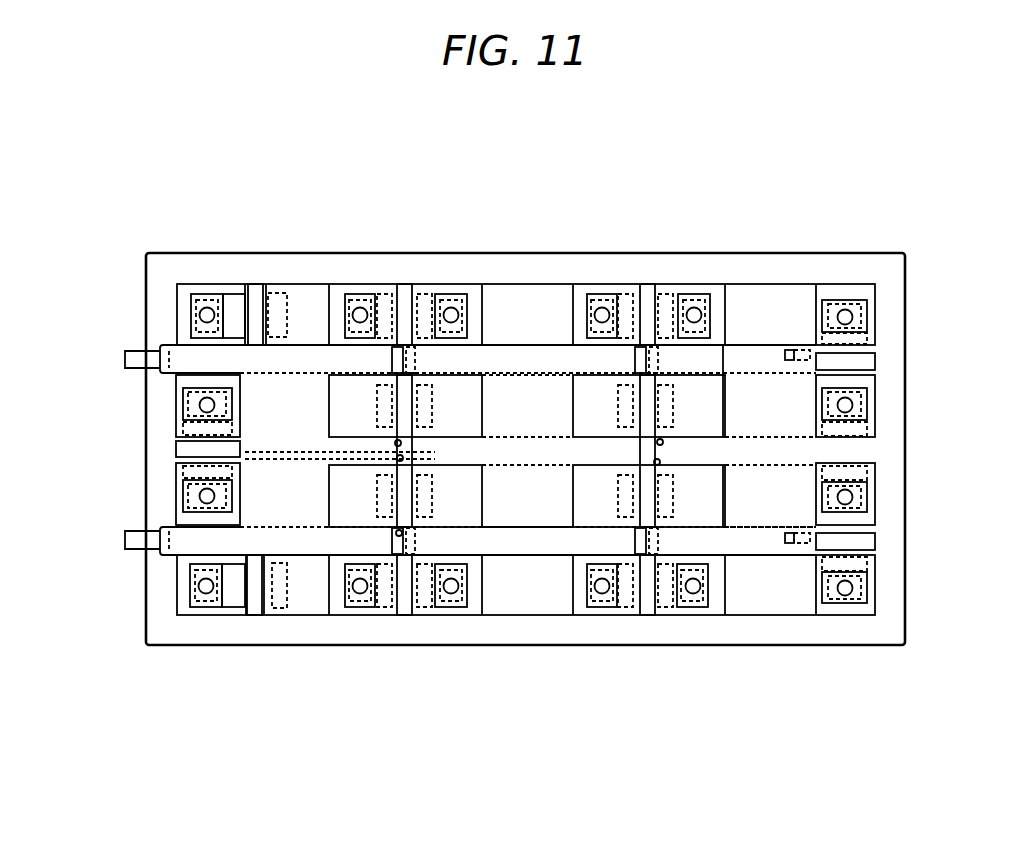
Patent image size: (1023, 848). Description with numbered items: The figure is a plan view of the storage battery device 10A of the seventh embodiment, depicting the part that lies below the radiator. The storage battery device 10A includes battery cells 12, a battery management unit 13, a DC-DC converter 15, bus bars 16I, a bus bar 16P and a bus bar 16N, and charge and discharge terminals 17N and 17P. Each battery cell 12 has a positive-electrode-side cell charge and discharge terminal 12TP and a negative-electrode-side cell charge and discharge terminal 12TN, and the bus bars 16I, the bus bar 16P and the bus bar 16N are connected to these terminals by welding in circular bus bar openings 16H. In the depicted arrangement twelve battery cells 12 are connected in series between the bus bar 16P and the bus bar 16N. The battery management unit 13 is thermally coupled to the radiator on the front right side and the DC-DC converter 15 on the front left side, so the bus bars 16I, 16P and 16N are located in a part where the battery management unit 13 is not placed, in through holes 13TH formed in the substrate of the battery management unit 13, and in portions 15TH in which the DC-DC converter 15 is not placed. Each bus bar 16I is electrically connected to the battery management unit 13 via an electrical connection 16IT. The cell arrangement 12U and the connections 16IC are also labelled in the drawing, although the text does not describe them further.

The storage battery device 10A is at (518, 138).
The battery cell 12 is at (305, 300).
The negative-electrode-side cell charge and discharge terminal 12TN is at (200, 294).
The positive-electrode-side cell charge and discharge terminal 12TP is at (352, 294).
The substrate unit arrangement 12U is at (515, 772).
The battery management unit 13 is at (716, 600).
The through hole 13TH is at (700, 450).
The DC-DC converter 15 is at (256, 600).
The portion in which the DC-DC converter is not placed 15TH is at (403, 442).
The bus bar opening 16H is at (205, 404).
The bus bar 16I is at (424, 294).
The conductive connection portion 16IC is at (400, 286).
The electrical connection 16IT is at (792, 546).
The bus bar 16N is at (237, 293).
The bus bar 16P is at (233, 600).
The charge and discharge terminal 17N is at (125, 358).
The charge and discharge terminal 17P is at (125, 543).